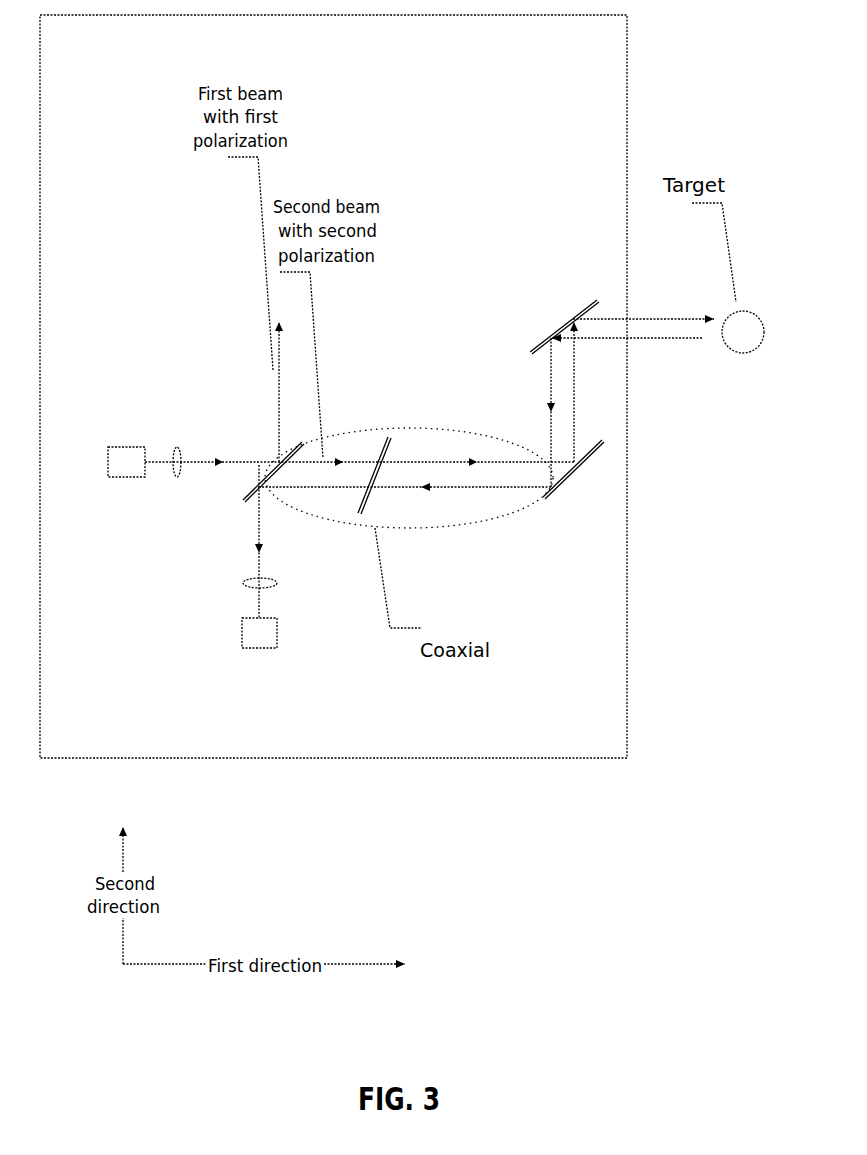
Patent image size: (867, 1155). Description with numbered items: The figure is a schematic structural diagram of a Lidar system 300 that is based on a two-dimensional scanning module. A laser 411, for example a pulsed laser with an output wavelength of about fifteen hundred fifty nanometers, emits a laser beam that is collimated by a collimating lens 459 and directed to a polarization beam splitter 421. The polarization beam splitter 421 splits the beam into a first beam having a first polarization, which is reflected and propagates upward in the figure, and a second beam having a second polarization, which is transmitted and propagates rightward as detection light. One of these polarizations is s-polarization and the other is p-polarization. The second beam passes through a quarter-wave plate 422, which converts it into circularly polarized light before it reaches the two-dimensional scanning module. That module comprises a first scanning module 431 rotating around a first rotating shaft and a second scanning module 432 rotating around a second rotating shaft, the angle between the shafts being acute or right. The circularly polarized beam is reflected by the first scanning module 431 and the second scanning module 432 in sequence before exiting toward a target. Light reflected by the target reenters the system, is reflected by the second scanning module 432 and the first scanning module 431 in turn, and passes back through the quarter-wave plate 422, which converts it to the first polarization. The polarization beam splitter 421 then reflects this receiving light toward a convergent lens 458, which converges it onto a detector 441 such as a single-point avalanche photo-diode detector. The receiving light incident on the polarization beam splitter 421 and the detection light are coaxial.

The Lidar system 300 is at (413, 46).
The laser 411 is at (103, 390).
The collimating lens 459 is at (156, 390).
The polarization beam splitter 421 is at (252, 402).
The quarter-wave plate 422 is at (356, 408).
The second scanning module 432 is at (554, 288).
The first scanning module 431 is at (546, 521).
The detector 441 is at (230, 584).
The convergent lens 458 is at (304, 651).